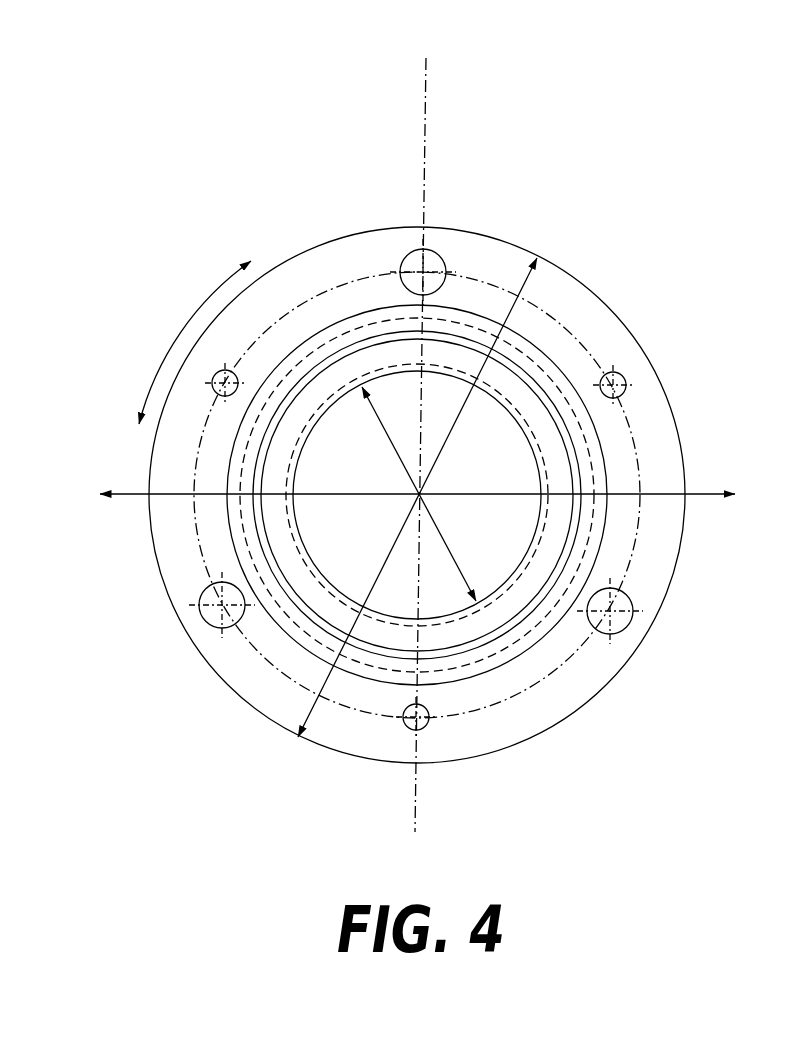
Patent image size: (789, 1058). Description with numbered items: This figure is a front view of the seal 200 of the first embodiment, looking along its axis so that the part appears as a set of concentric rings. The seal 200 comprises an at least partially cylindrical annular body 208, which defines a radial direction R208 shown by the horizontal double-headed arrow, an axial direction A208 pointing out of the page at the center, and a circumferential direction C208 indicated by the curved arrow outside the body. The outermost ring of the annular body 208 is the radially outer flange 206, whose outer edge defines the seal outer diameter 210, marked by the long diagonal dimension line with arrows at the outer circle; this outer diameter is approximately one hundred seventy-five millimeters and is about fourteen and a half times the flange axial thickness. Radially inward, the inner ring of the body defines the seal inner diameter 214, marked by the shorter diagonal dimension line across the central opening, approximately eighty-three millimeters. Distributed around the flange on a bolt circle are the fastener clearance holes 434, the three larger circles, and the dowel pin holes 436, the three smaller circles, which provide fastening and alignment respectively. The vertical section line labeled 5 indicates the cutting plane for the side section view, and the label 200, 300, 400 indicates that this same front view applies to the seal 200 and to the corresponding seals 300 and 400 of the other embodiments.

The seal 200 is at (472, 158).
The flange assembly 300 is at (426, 447).
The flange assembly 400 is at (426, 447).
The radially outer flange 206 is at (617, 332).
The at least partially cylindrical annular body 208 is at (590, 268).
The seal outer diameter 210 is at (522, 266).
The seal inner diameter 214 is at (375, 398).
The fastener clearance holes 434 is at (400, 267).
The dowel pin holes 436 is at (628, 367).
The circumferential direction C208 is at (190, 327).
The radial direction R208 is at (669, 494).
The axial direction A208 is at (420, 494).
The section line 5- 5 is at (353, 78).